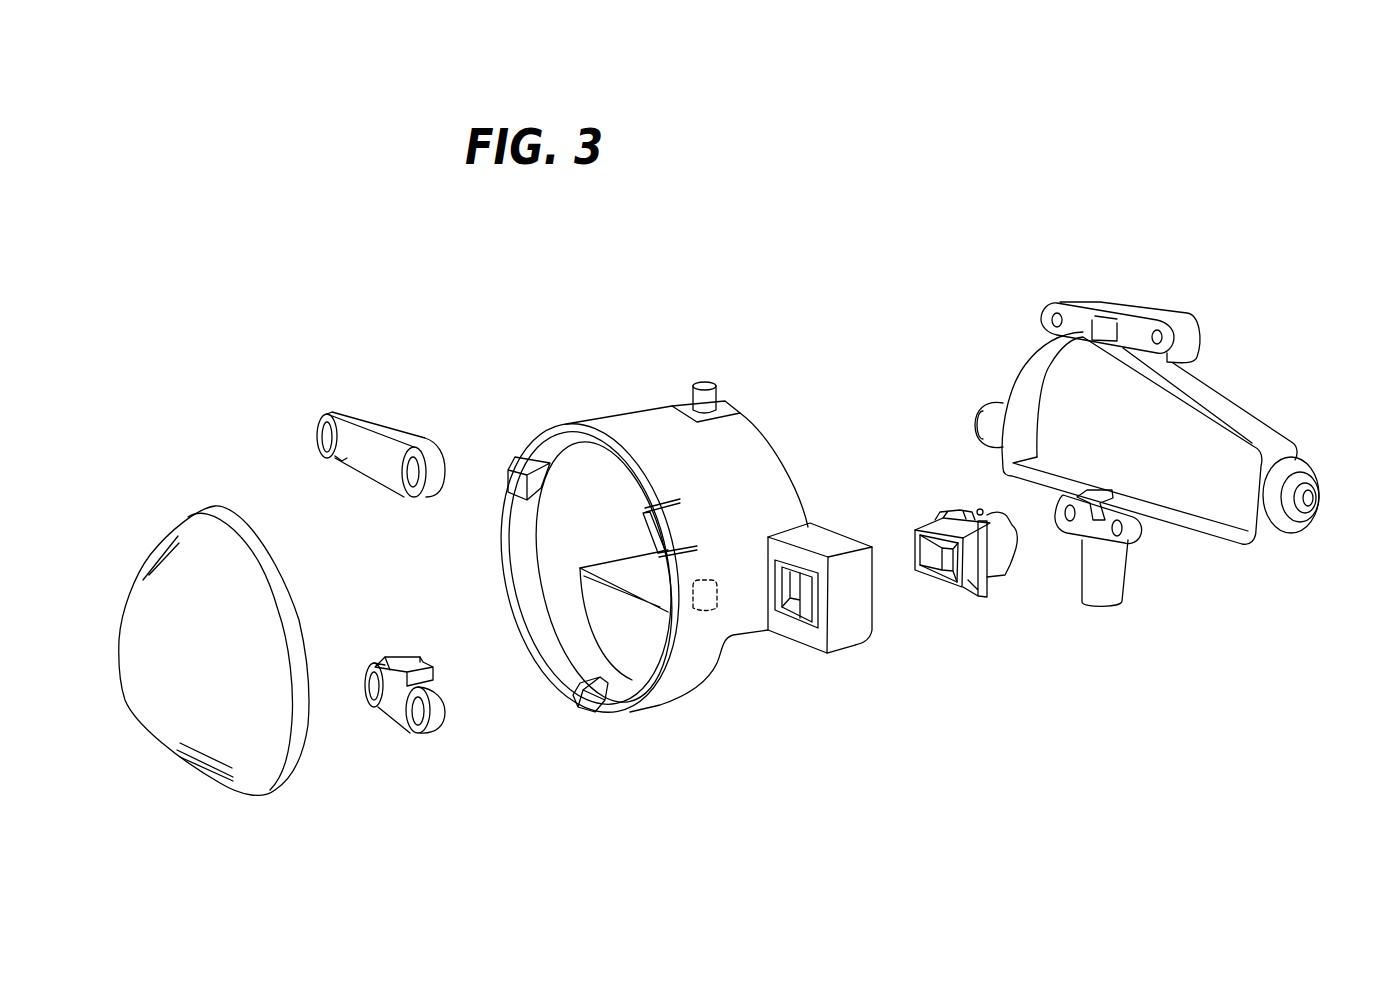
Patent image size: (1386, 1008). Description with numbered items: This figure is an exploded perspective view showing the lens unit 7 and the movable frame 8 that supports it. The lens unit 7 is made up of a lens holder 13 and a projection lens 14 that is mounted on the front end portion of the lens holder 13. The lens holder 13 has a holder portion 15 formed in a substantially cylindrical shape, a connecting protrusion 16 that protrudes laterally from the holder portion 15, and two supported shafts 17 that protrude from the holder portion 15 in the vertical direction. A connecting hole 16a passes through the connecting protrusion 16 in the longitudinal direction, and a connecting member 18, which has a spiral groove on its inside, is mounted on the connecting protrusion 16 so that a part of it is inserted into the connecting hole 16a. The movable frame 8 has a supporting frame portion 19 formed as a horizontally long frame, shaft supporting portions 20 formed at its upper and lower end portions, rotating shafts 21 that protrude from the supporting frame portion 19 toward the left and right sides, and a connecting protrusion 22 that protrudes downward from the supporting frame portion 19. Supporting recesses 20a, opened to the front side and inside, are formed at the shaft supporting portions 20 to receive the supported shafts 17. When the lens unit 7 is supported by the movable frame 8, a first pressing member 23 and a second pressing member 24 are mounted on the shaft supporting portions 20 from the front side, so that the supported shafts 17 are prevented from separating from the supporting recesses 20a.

The lens unit 7 is at (357, 271).
The movable frame 8 is at (1100, 300).
The lens holder 13 is at (597, 420).
The projection lens 14 is at (193, 523).
The holder portion 15 is at (643, 417).
The connecting protrusion 16 is at (849, 634).
The connecting hole 16a is at (800, 590).
The supported shaft 17 is at (712, 397).
The connecting member 18 is at (957, 598).
The supporting frame portion 19 is at (1218, 390).
The shaft supporting portion 20 is at (1135, 307).
The supporting recess 20a is at (1100, 330).
The rotating shaft 21 is at (975, 408).
The connecting protrusion 22 is at (1113, 595).
The first pressing member 23 is at (385, 425).
The second pressing member 24 is at (445, 723).